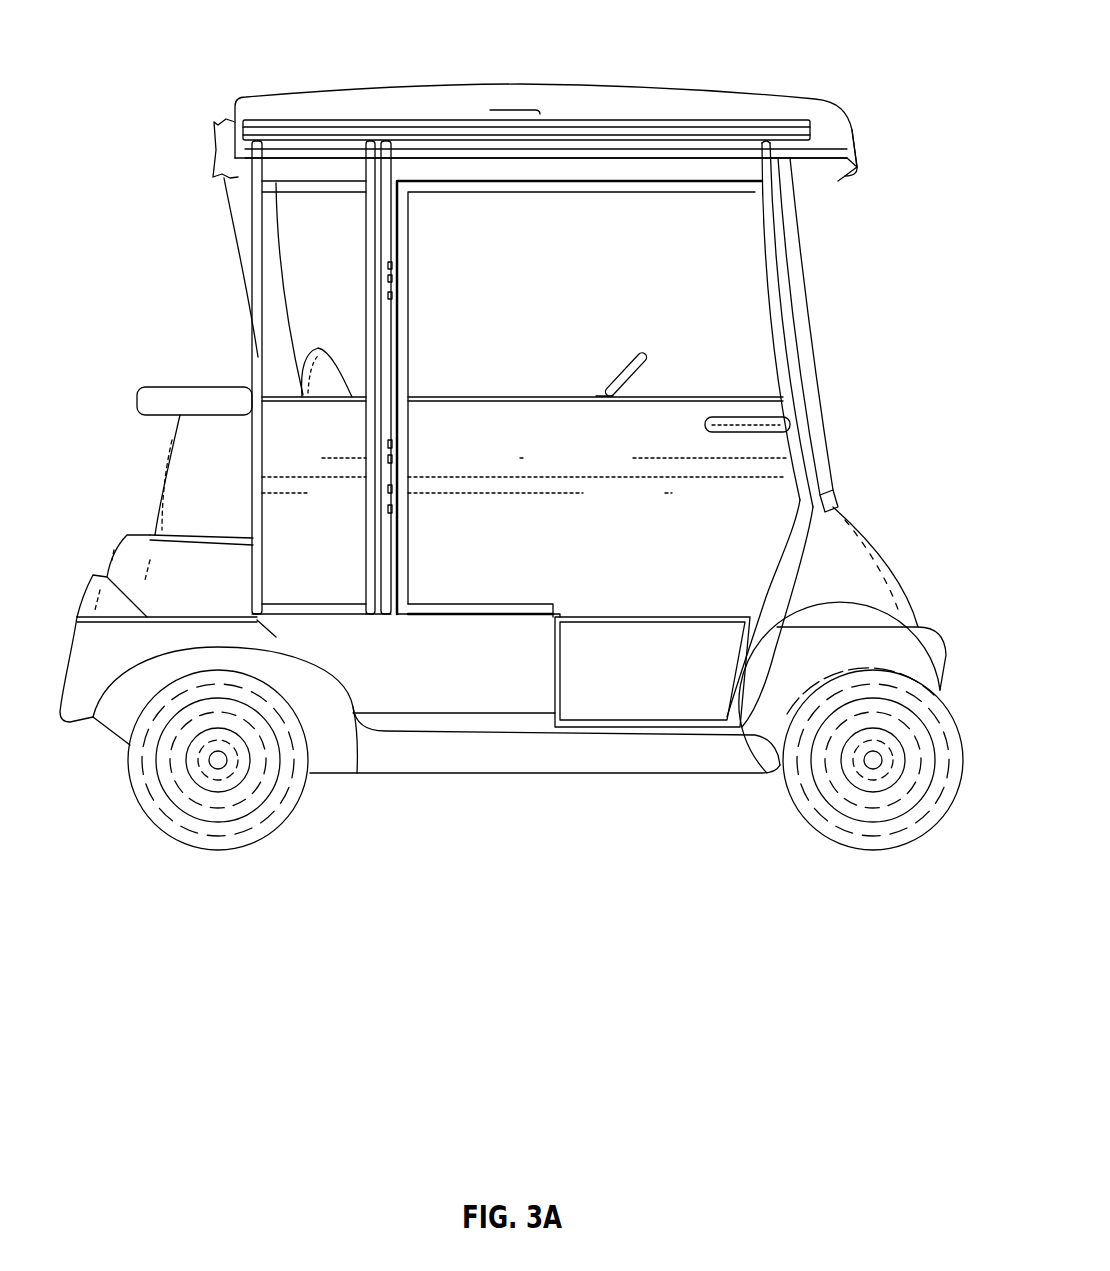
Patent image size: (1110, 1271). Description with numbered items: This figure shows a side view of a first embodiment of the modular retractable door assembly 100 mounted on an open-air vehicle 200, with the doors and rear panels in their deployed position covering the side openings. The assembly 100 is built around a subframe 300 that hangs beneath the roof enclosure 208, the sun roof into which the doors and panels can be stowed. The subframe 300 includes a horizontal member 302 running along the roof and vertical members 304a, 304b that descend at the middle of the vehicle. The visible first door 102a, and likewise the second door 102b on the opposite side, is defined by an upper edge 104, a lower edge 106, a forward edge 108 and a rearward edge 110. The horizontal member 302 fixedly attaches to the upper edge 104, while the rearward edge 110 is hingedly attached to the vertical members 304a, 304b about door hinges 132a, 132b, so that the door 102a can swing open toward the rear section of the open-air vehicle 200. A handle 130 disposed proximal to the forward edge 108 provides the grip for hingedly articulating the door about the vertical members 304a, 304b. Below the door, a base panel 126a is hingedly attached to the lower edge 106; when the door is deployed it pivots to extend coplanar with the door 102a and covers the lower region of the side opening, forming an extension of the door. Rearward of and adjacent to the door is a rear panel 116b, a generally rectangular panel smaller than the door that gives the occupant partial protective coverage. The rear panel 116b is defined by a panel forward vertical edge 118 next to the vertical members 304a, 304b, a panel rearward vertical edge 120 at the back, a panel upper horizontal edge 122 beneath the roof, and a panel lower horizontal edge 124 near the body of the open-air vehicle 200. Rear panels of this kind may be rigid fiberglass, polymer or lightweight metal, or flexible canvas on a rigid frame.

The modular retractable door assembly 100 is at (525, 468).
The first door 102a is at (622, 547).
The second door 102b is at (836, 128).
The upper edge 104 is at (673, 197).
The lower edge 106 is at (475, 617).
The forward edge 108 is at (802, 300).
The rearward edge 110 is at (405, 604).
The rear panel 116b is at (247, 130).
The panel forward vertical edge 118 is at (368, 617).
The panel rearward vertical edge 120 is at (258, 357).
The panel upper horizontal edge 122 is at (298, 188).
The panel lower horizontal edge 124 is at (278, 607).
The base panel 126a is at (677, 678).
The handle 130 is at (775, 425).
The door hinge 132a is at (395, 290).
The door hinge 132b is at (385, 480).
The open-air vehicle 200 is at (884, 535).
The roof enclosure 208 is at (545, 86).
The subframe 300 is at (612, 140).
The horizontal member 302 is at (503, 158).
The vertical member 304a is at (385, 358).
The vertical member 304b is at (782, 258).